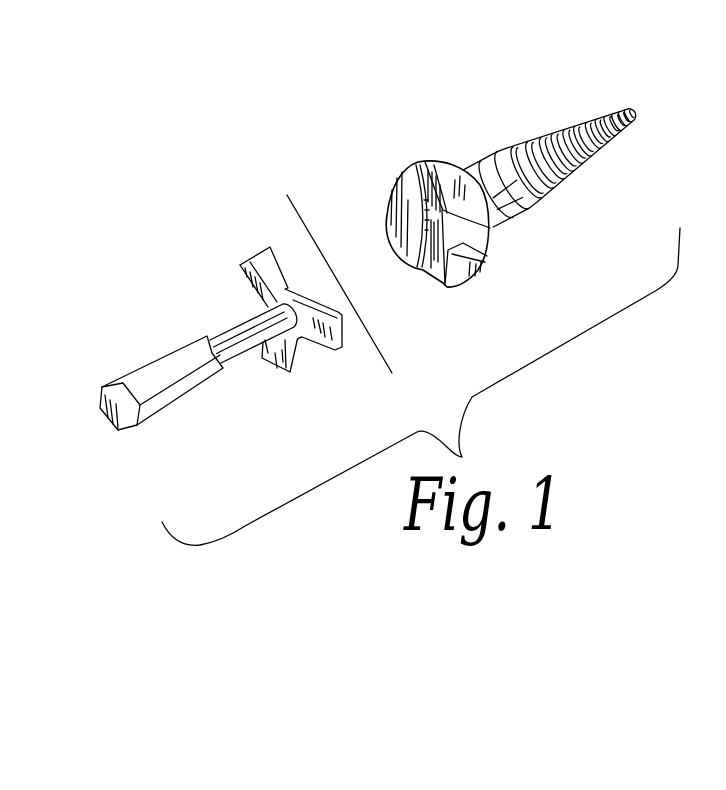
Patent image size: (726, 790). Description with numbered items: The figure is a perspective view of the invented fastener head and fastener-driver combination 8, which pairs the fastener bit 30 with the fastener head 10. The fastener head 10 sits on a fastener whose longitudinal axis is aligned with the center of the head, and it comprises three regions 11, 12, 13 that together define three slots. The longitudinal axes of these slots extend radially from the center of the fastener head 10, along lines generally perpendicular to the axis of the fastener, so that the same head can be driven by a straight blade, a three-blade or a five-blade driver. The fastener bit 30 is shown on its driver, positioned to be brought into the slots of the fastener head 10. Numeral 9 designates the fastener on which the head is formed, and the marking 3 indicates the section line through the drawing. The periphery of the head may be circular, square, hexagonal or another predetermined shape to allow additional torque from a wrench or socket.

The combination 8 is at (305, 144).
The screw shank 9 is at (522, 212).
The fastener head 10 is at (395, 178).
The region 11 is at (443, 180).
The region 12 is at (463, 268).
The region 13 is at (403, 228).
The fastener bit 30 is at (282, 362).
The section line 3- 3 is at (341, 383).